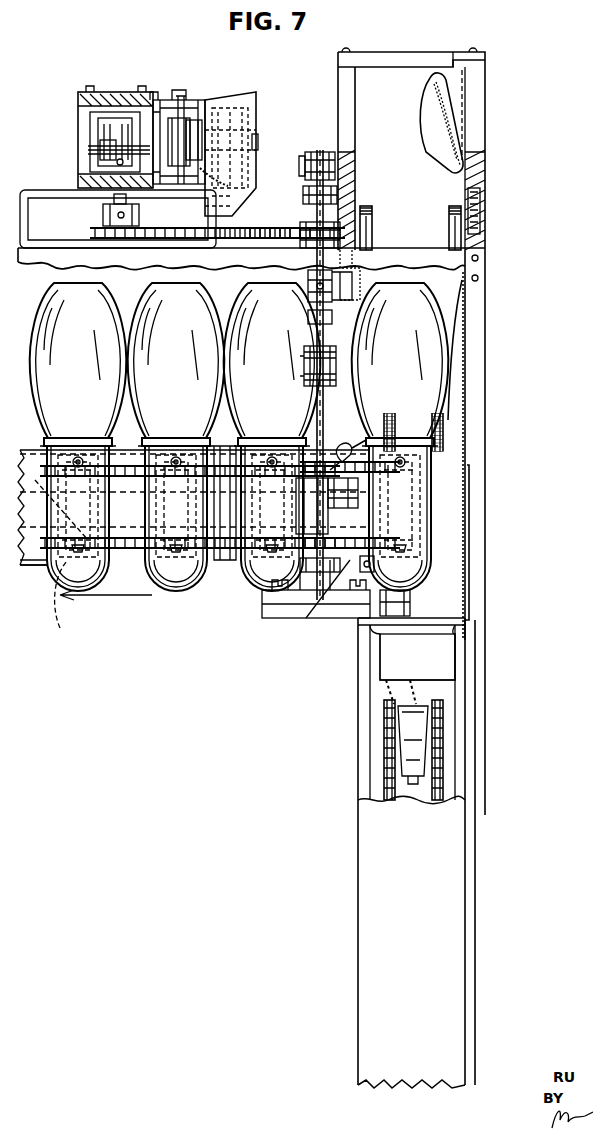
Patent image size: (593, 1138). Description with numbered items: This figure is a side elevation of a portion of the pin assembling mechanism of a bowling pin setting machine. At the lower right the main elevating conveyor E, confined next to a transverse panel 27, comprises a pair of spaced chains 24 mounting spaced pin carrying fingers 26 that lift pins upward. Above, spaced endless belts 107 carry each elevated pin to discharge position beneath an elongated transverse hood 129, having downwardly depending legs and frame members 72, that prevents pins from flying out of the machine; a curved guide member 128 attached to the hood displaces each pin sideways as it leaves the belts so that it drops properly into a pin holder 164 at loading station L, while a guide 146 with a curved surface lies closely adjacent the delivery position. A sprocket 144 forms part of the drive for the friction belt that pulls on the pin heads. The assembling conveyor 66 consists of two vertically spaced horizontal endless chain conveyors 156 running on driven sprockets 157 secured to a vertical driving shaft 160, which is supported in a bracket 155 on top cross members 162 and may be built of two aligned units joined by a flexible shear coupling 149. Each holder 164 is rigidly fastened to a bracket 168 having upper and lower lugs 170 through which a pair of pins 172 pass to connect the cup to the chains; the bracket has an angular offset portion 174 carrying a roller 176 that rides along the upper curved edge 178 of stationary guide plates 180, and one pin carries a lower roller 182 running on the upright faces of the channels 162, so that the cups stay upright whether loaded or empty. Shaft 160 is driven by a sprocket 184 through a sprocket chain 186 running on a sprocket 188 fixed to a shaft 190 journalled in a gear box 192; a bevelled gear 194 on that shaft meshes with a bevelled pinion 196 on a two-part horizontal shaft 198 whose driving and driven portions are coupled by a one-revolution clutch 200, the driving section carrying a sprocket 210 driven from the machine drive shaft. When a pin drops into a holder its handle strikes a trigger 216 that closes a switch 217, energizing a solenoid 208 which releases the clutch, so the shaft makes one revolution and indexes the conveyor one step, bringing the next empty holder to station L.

The transverse hood 129 is at (405, 62).
The frame wall 72 is at (348, 152).
The curved guide member 128 is at (440, 108).
The endless belts 107 is at (450, 210).
The sprocket 144 is at (482, 218).
The gear box 192 is at (80, 110).
The bevelled gear 194 is at (90, 150).
The bevelled pinion 196 is at (146, 112).
The one-revolution clutch 200 is at (190, 118).
The solenoid 208 is at (200, 140).
The sprocket 210 is at (248, 96).
The horizontal shaft 198 is at (258, 140).
The shaft 190 is at (112, 204).
The sprocket 188 is at (92, 234).
The sprocket chain 186 is at (196, 228).
The sprocket 184 is at (304, 240).
The vertical driving shaft 160 is at (318, 154).
The bracket 155 is at (302, 170).
The flexible shear coupling 149 is at (336, 366).
The pin holder 164 is at (174, 566).
The guide plates 180 is at (124, 458).
The endless chain conveyors 156 is at (132, 476).
The upper curved edge 178 is at (226, 448).
The pins 172 is at (96, 560).
The top cross members 162 is at (36, 562).
The roller 182 is at (216, 601).
The driven sprockets 157 is at (346, 476).
The bracket 168 is at (358, 496).
The lugs 170 is at (350, 520).
The roller 176 is at (346, 444).
The angular offset portion 174 is at (355, 446).
The guide 146 is at (452, 370).
The trigger 216 is at (386, 608).
The assembling conveyor 66 is at (196, 626).
The loading station L is at (420, 596).
The transverse panel 27 is at (478, 928).
The switch 217 is at (408, 662).
The pin carrying fingers 26 is at (420, 712).
The chains 24 is at (384, 770).
The main elevating conveyor E is at (350, 738).